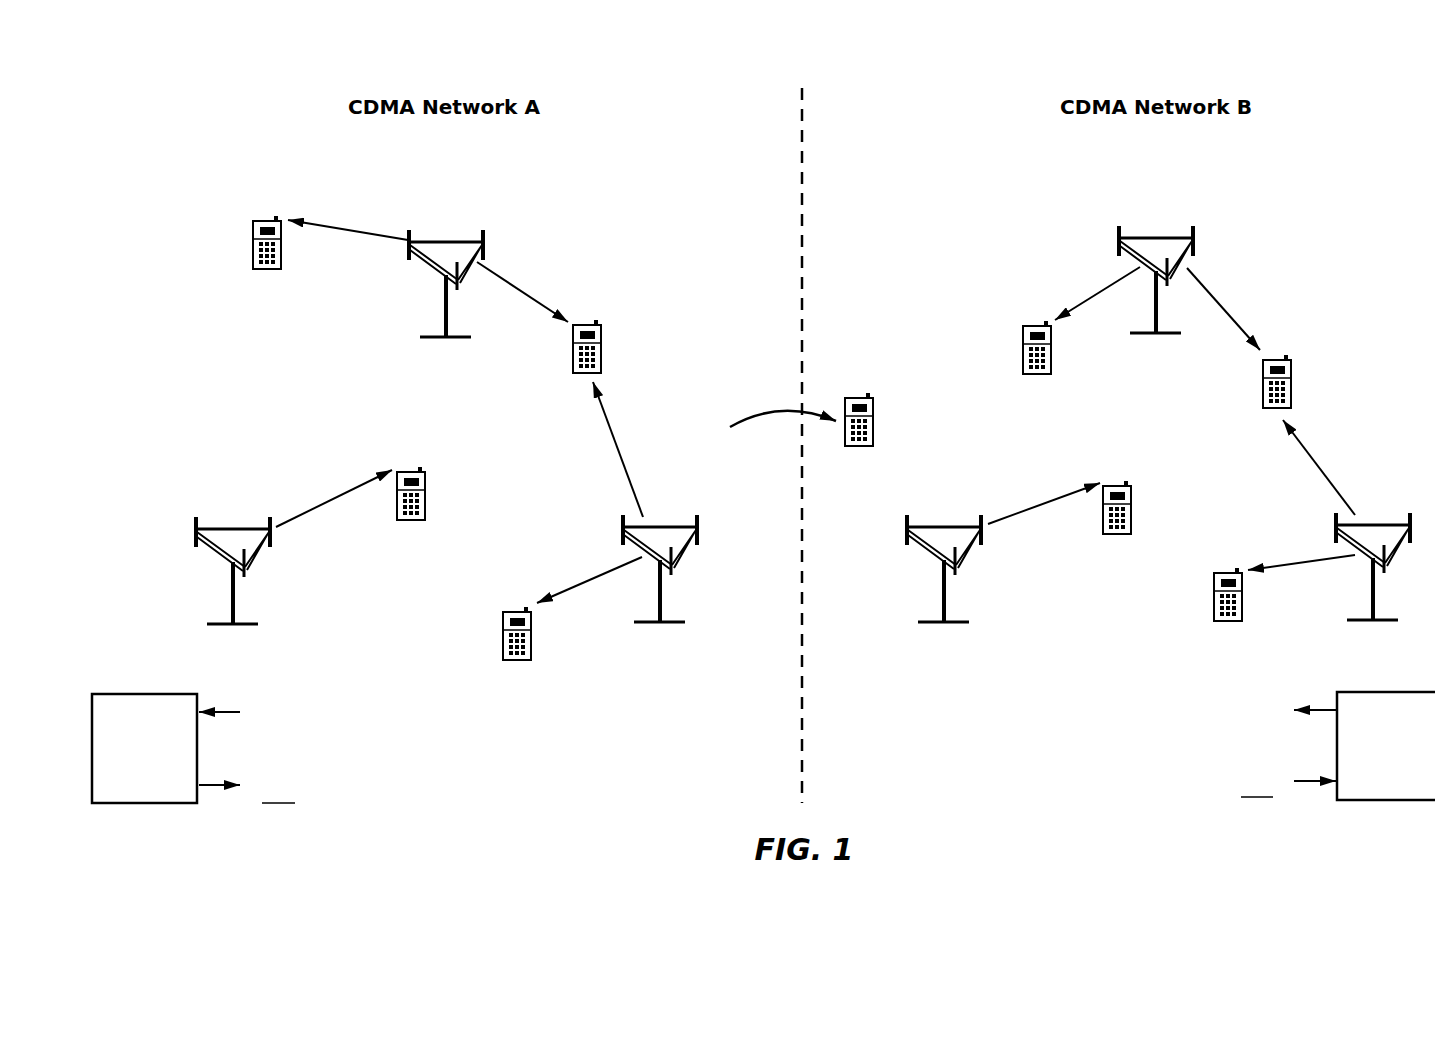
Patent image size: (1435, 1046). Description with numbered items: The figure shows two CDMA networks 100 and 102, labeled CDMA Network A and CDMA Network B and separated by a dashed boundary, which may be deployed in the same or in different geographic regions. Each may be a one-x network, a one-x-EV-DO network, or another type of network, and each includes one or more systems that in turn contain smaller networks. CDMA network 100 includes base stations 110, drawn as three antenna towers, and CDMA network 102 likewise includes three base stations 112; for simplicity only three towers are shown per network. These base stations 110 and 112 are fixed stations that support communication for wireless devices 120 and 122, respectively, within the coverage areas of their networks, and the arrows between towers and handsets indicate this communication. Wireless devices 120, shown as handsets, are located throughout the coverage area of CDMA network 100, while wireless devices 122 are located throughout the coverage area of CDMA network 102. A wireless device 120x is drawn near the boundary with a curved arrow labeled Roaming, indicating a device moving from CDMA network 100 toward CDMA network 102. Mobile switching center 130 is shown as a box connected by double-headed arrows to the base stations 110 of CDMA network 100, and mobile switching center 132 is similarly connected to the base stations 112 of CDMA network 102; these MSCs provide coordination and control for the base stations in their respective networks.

The CDMA network 100 is at (662, 194).
The CDMA network 102 is at (1377, 190).
The base station 110 is at (441, 242).
The base station 112 is at (1152, 238).
The wireless device 120 is at (256, 221).
The wireless device 120x is at (852, 398).
The wireless device 122 is at (1028, 326).
The mobile switching center 130 is at (140, 694).
The mobile switching center 132 is at (1388, 692).